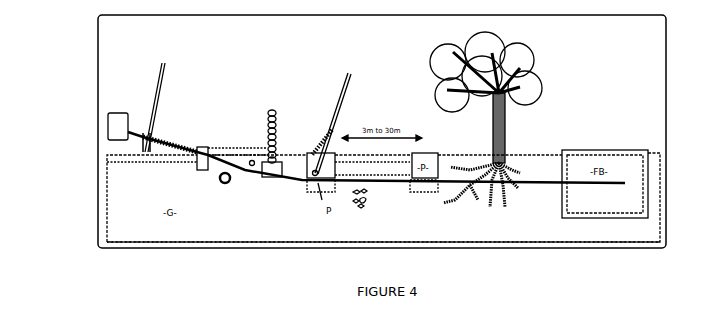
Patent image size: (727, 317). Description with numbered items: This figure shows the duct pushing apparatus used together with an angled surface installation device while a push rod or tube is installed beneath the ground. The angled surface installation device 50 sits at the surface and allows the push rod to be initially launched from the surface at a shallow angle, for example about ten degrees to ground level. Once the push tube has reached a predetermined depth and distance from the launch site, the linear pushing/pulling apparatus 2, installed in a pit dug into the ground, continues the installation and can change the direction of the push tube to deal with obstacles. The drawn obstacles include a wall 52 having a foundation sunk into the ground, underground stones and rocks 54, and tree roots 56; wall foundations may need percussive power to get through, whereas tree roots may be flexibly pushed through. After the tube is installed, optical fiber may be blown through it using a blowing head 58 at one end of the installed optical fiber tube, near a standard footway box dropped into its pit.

The blowing head 58 is at (117, 128).
The angled surface installation device 50 is at (150, 80).
The linear pushing/pulling apparatus 2 is at (330, 84).
The wall 52 is at (267, 177).
The underground stones and rocks 54 is at (365, 205).
The tree roots 56 is at (507, 203).